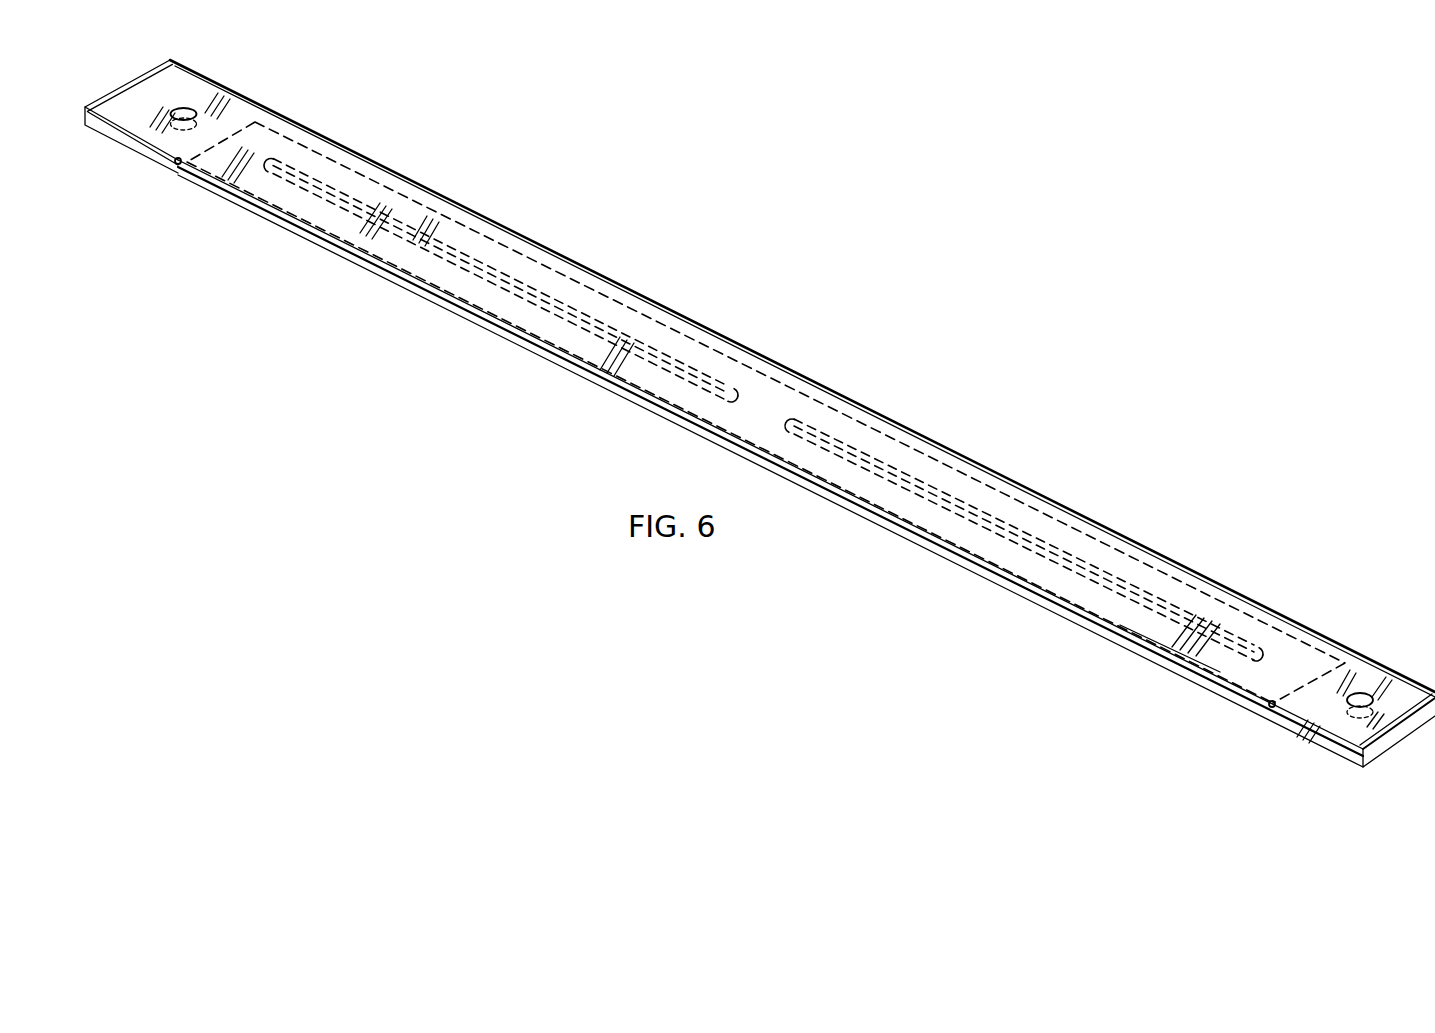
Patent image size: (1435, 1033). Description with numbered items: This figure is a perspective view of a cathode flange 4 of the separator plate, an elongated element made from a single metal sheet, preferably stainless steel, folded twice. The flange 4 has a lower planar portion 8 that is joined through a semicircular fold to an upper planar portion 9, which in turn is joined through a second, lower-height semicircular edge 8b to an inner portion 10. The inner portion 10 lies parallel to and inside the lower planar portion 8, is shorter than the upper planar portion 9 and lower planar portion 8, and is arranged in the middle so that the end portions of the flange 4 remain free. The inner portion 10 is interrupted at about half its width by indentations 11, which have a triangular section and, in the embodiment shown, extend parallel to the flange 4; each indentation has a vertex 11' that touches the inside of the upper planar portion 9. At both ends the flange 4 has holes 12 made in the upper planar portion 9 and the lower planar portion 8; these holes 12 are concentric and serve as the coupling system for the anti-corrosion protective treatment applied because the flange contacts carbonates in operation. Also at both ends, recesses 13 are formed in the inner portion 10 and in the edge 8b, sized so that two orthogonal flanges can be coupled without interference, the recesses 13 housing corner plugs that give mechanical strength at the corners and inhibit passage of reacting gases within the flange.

The flange 4 is at (733, 280).
The lower planar portion 8 is at (432, 297).
The semicircular edge 8b is at (263, 195).
The upper planar portion 9 is at (340, 155).
The inner portion 10 is at (288, 133).
The indentation 11 is at (763, 403).
The vertex 11' is at (763, 414).
The hole 12 is at (184, 111).
The recess 13 is at (255, 122).